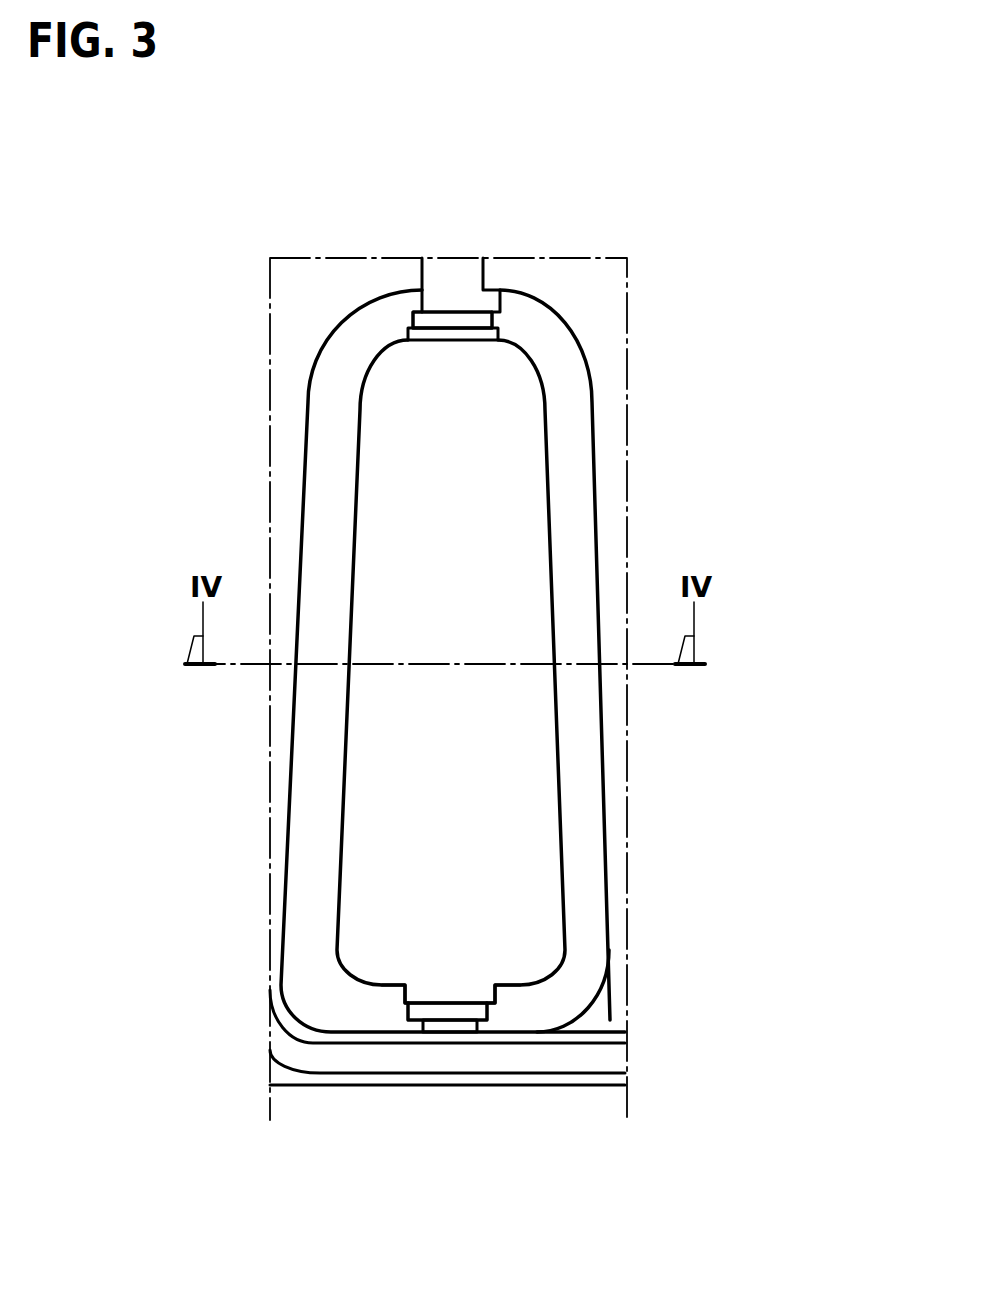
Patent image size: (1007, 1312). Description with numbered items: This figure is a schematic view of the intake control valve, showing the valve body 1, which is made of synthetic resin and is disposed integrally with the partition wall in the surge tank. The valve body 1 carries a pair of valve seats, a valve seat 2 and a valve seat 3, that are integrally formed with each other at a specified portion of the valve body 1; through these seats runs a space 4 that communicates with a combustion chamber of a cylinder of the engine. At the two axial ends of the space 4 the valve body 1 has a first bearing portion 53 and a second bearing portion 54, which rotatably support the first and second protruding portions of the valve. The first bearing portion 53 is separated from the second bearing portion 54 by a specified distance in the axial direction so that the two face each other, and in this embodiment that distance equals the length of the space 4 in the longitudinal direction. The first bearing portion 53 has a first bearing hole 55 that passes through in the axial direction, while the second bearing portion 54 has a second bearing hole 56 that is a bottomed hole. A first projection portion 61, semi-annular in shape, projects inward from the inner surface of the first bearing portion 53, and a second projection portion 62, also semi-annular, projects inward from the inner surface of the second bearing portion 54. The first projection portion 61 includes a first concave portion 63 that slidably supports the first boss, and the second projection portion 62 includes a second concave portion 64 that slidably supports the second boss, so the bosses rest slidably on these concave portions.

The valve body 1 is at (607, 303).
The valve seat 2 is at (312, 750).
The valve seat 3 is at (589, 756).
The space 4 is at (463, 554).
The first bearing portion 53 is at (438, 1025).
The second bearing portion 54 is at (458, 277).
The first bearing hole 55 is at (458, 1020).
The second bearing hole 56 is at (462, 327).
The first projection portion 61 is at (433, 1008).
The second projection portion 62 is at (437, 320).
The first concave portion 63 is at (447, 1011).
The second concave portion 64 is at (452, 320).